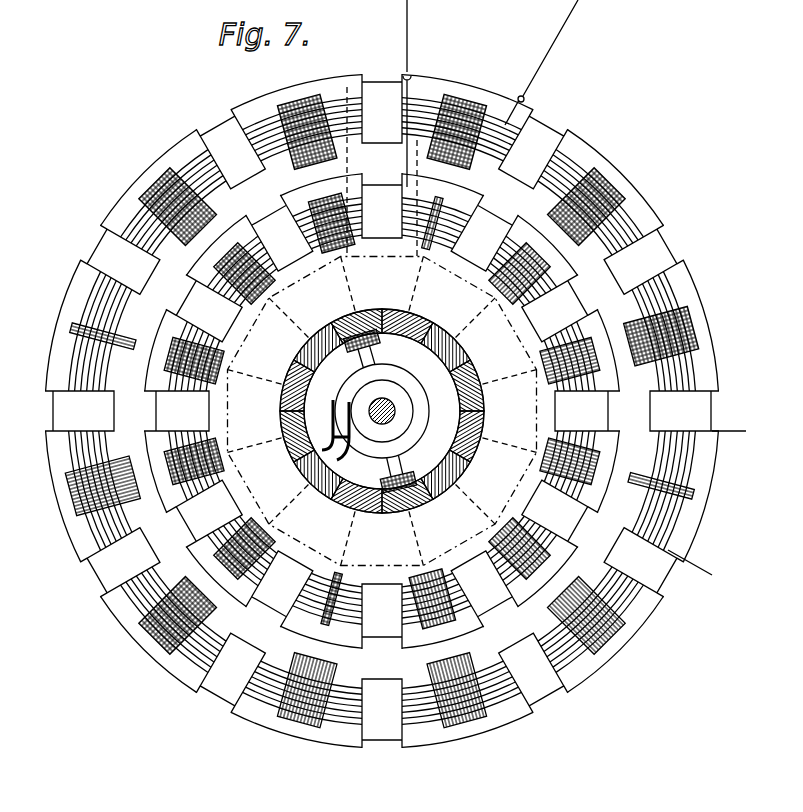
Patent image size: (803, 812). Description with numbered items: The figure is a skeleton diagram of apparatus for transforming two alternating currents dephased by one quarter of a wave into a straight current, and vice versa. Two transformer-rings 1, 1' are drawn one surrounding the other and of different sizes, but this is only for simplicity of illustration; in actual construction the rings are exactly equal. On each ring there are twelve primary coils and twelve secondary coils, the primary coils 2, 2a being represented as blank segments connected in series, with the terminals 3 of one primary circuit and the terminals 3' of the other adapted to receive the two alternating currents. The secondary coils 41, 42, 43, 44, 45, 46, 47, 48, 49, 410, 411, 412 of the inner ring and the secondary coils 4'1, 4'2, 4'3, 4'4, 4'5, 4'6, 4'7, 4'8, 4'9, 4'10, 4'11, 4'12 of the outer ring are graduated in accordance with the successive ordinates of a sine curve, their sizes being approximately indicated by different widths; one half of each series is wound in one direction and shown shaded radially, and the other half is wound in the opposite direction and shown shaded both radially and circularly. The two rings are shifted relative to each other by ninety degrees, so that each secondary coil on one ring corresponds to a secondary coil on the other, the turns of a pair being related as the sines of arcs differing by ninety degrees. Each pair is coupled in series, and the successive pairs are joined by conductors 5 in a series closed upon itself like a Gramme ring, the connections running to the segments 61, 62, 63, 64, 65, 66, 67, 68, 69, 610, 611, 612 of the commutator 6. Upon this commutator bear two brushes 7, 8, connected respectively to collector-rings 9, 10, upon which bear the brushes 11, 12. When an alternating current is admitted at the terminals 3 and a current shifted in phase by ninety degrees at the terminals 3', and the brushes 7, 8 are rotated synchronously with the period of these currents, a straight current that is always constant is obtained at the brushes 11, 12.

The transformer-ring 1 is at (382, 411).
The transformer-ring 1' is at (382, 411).
The primary coils 2 is at (382, 411).
The primary coils 2a is at (382, 411).
The terminals 3 is at (490, 93).
The terminals 3' is at (715, 496).
The secondary coil 41 is at (428, 210).
The secondary coil 42 is at (524, 262).
The secondary coil 43 is at (585, 350).
The secondary coil 44 is at (590, 460).
The secondary coil 45 is at (540, 552).
The secondary coil 46 is at (450, 610).
The secondary coil 47 is at (334, 608).
The secondary coil 48 is at (240, 565).
The secondary coil 49 is at (180, 470).
The secondary coil 410 is at (180, 356).
The secondary coil 411 is at (230, 270).
The secondary coil 412 is at (320, 215).
The secondary coil 4'1 is at (687, 485).
The secondary coil 4'2 is at (612, 617).
The secondary coil 4'3 is at (477, 706).
The secondary coil 4'4 is at (303, 713).
The secondary coil 4'5 is at (164, 628).
The secondary coil 4'6 is at (78, 486).
The secondary coil 4'7 is at (76, 331).
The secondary coil 4'8 is at (164, 197).
The secondary coil 4'9 is at (307, 114).
The secondary coil 4'10 is at (457, 114).
The secondary coil 4'11 is at (602, 197).
The secondary coil 4'12 is at (691, 336).
The conductors 5 is at (381, 326).
The commutator 6 is at (485, 412).
The commutator segment 61 is at (405, 324).
The commutator segment 62 is at (445, 347).
The commutator segment 63 is at (469, 388).
The commutator segment 64 is at (469, 434).
The commutator segment 65 is at (445, 474).
The commutator segment 66 is at (398, 513).
The commutator segment 67 is at (350, 502).
The commutator segment 68 is at (308, 472).
The commutator segment 69 is at (290, 426).
The commutator segment 610 is at (296, 388).
The commutator segment 611 is at (318, 347).
The commutator segment 612 is at (350, 321).
The brush 7 is at (372, 345).
The brush 8 is at (386, 476).
The collector-ring 9 is at (364, 378).
The collector-ring 10 is at (390, 406).
The brush 11 is at (329, 425).
The brush 12 is at (341, 458).